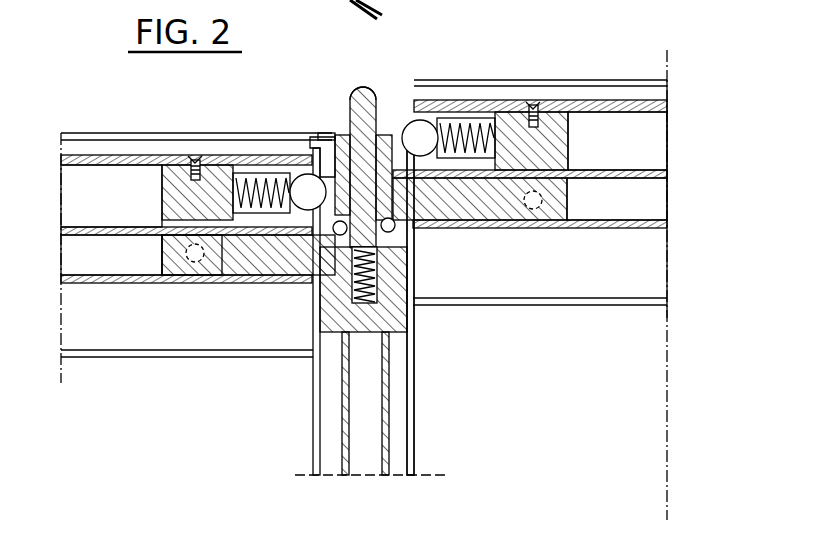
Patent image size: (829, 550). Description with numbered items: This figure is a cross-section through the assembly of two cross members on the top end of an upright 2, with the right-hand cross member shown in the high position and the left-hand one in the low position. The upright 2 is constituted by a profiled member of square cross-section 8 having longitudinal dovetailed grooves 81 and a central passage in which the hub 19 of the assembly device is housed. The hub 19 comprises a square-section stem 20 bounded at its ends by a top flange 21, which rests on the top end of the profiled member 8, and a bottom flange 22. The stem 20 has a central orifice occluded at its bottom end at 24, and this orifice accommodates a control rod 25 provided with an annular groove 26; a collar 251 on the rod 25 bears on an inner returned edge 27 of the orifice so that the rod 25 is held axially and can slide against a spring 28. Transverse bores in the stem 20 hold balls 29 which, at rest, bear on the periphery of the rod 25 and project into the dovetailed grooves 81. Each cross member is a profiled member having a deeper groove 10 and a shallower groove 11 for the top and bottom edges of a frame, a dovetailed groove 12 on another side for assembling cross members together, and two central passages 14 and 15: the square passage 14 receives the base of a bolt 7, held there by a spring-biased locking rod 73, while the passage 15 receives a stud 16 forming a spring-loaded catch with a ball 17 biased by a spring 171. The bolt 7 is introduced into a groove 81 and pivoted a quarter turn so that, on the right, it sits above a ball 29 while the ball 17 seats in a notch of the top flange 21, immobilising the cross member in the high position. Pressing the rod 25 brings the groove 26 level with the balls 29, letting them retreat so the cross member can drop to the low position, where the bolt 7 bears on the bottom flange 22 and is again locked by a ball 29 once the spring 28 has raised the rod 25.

The upright 2 is at (418, 418).
The bolt 7 is at (420, 228).
The locking rod 73 is at (178, 268).
The profiled member of square cross-section 8 is at (345, 445).
The dovetailed groove 81 is at (398, 447).
The groove 10 is at (620, 276).
The groove 11 is at (604, 95).
The dovetailed groove 12 is at (133, 126).
The longitudinal passage 14 is at (115, 266).
The longitudinal passage 15 is at (110, 212).
The stud 16 is at (212, 186).
The ball 17 is at (424, 130).
The spring 171 is at (460, 145).
The hub 19 is at (327, 127).
The stem 20 is at (322, 175).
The flange 21 is at (390, 135).
The flange 22 is at (414, 335).
The occluded bottom end 24 is at (325, 318).
The control rod 25 is at (358, 88).
The collar 251 is at (338, 130).
The annular groove 26 is at (395, 228).
The inner returned edge 27 is at (378, 90).
The spring 28 is at (328, 250).
The ball 29 is at (415, 262).